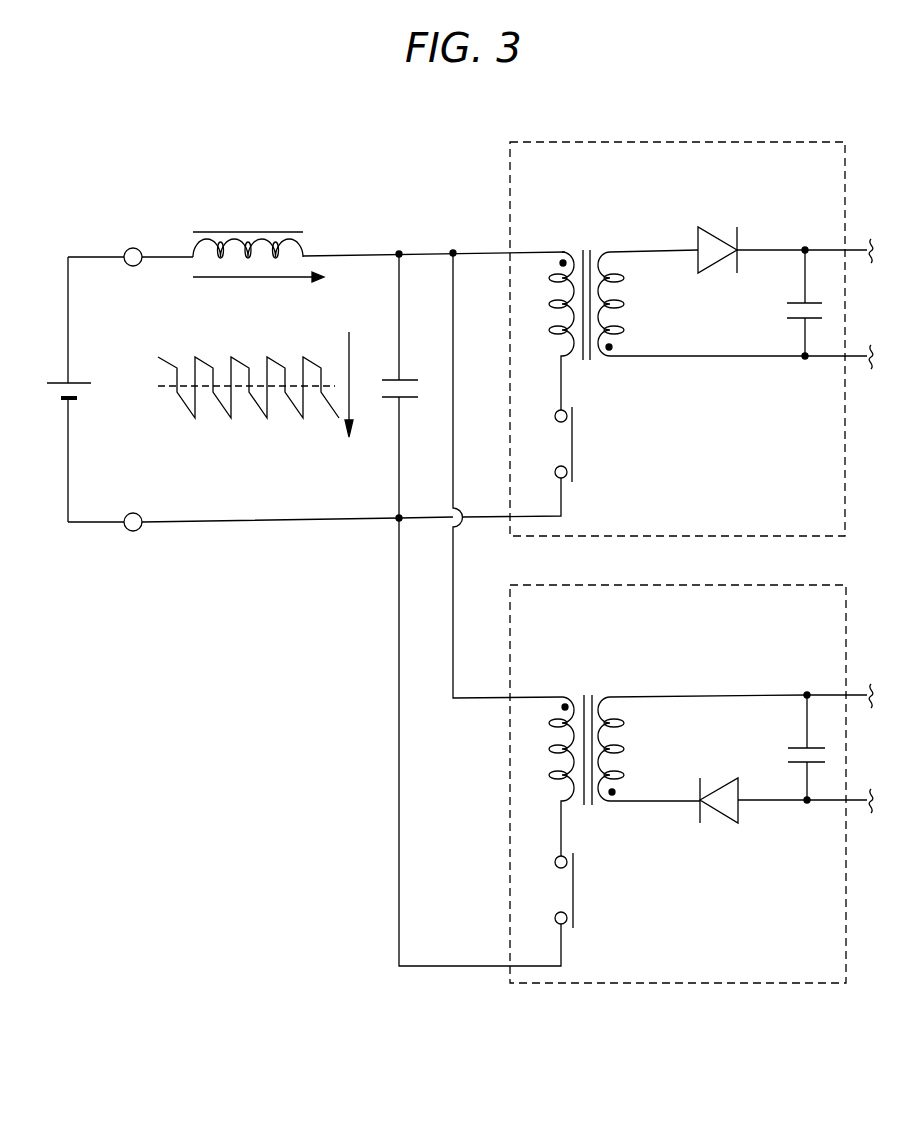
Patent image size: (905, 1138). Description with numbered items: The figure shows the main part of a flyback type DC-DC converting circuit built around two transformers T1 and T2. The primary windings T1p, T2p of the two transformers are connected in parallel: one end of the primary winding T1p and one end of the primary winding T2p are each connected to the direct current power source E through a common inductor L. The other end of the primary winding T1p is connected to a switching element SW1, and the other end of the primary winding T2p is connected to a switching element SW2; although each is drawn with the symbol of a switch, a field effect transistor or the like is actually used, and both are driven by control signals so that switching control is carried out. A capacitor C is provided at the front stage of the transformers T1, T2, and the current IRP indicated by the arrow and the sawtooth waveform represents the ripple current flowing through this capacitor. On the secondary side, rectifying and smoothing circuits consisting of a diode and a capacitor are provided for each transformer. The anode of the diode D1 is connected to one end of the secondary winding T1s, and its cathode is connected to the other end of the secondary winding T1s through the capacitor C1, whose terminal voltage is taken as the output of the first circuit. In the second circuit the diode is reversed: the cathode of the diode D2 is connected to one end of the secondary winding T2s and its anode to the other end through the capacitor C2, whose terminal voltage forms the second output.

The direct current power source E is at (57, 383).
The inductor L is at (258, 253).
The ripple current IRP is at (261, 398).
The capacitor C is at (392, 380).
The transformer T1 is at (668, 285).
The primary winding T1p is at (570, 252).
The secondary winding T1s is at (701, 280).
The diode D1 is at (708, 232).
The capacitor C1 is at (792, 303).
The switching element SW1 is at (590, 445).
The transformer T2 is at (670, 731).
The primary winding T2p is at (570, 697).
The secondary winding T2s is at (702, 725).
The diode D2 is at (729, 786).
The capacitor C2 is at (795, 748).
The switching element SW2 is at (591, 892).